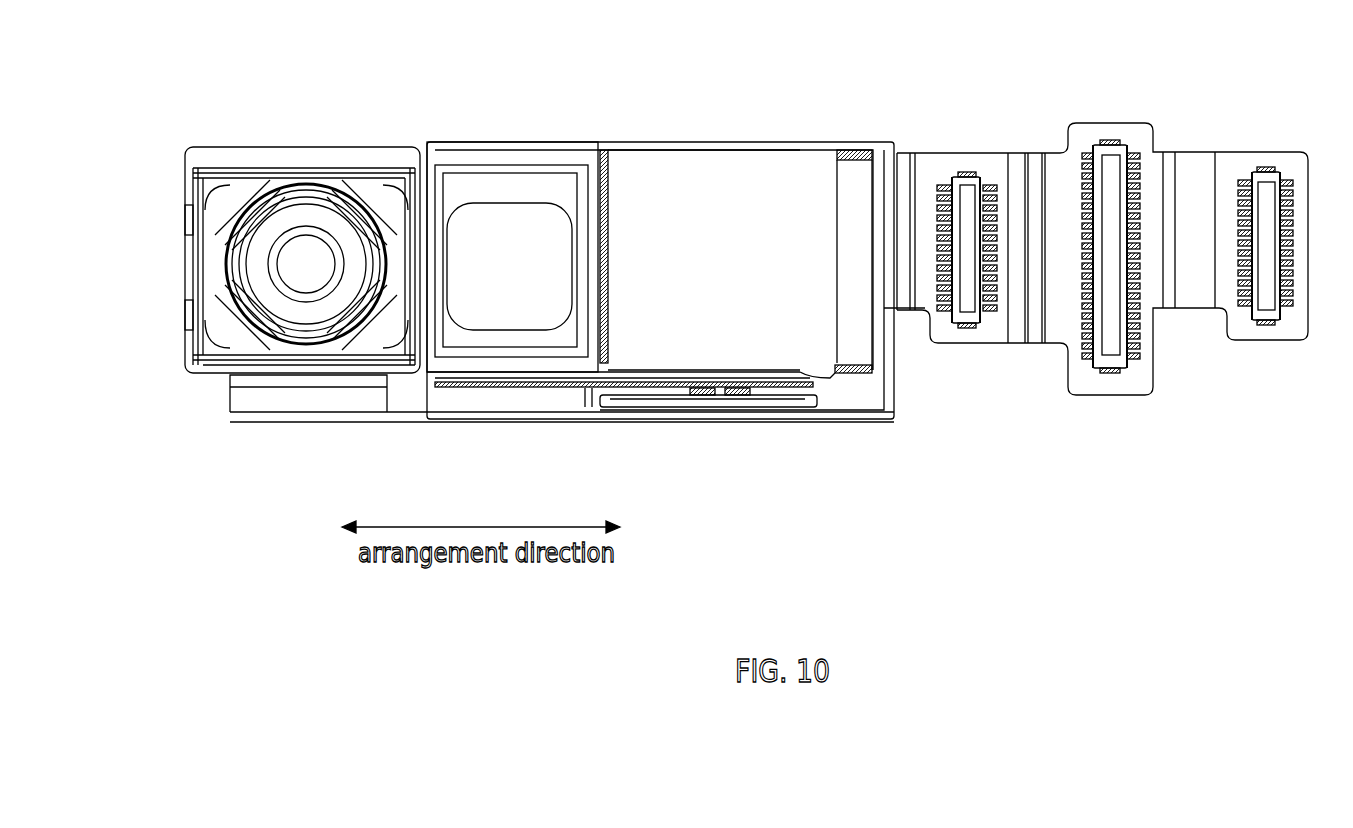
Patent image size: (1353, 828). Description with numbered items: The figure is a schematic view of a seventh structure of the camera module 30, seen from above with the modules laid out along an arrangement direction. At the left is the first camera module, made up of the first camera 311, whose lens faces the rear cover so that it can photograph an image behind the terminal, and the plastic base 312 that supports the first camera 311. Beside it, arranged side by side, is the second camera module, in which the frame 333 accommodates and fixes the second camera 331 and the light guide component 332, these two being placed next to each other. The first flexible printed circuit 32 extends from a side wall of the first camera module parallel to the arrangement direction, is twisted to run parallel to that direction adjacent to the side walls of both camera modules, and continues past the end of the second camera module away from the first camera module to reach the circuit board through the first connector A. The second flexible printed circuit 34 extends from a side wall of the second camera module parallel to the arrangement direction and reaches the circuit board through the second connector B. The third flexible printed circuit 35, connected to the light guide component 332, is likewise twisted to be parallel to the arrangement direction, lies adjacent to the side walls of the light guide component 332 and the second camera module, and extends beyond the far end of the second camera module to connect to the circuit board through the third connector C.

The camera module 30 is at (673, 140).
The first camera 311 is at (296, 225).
The base 312 is at (220, 170).
The first flexible printed circuit 32 is at (325, 402).
The second camera 331 is at (678, 240).
The light guide component 332 is at (500, 295).
The frame 333 is at (663, 397).
The second flexible printed circuit 34 is at (897, 195).
The third flexible printed circuit 35 is at (520, 147).
The first connector A is at (963, 300).
The second connector B is at (1125, 352).
The third connector C is at (1270, 292).